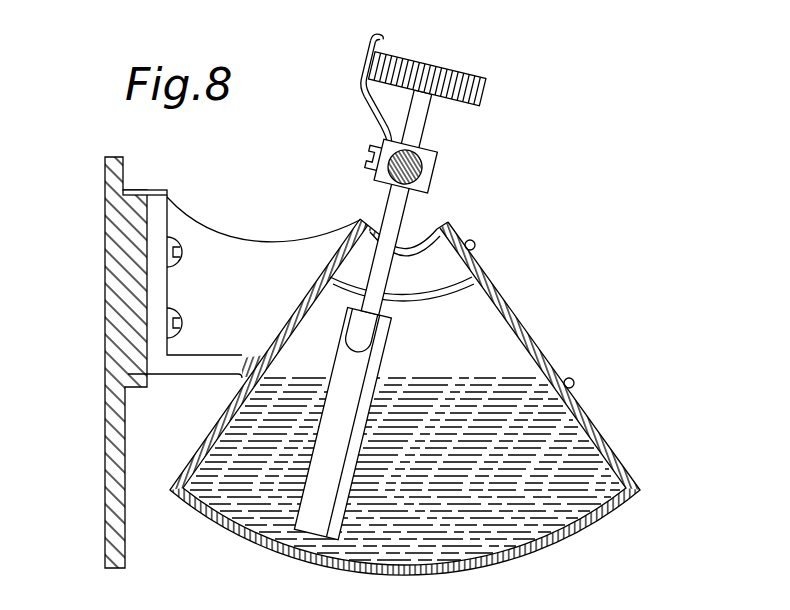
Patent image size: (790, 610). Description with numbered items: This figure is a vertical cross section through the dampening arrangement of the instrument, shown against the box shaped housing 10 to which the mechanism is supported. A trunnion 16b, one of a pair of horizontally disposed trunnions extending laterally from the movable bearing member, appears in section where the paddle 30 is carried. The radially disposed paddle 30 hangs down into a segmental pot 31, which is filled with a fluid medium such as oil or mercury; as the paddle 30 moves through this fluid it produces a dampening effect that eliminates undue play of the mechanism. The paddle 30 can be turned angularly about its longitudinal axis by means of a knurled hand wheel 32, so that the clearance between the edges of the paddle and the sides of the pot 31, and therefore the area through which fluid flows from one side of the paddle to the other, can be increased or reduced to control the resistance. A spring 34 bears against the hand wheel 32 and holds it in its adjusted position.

The box shaped housing 10 is at (108, 360).
The segmental pot 31 is at (585, 448).
The paddle 30 is at (342, 423).
The knurled hand wheel 32 is at (472, 80).
The spring 34 is at (368, 106).
The trunnion 16b is at (428, 173).